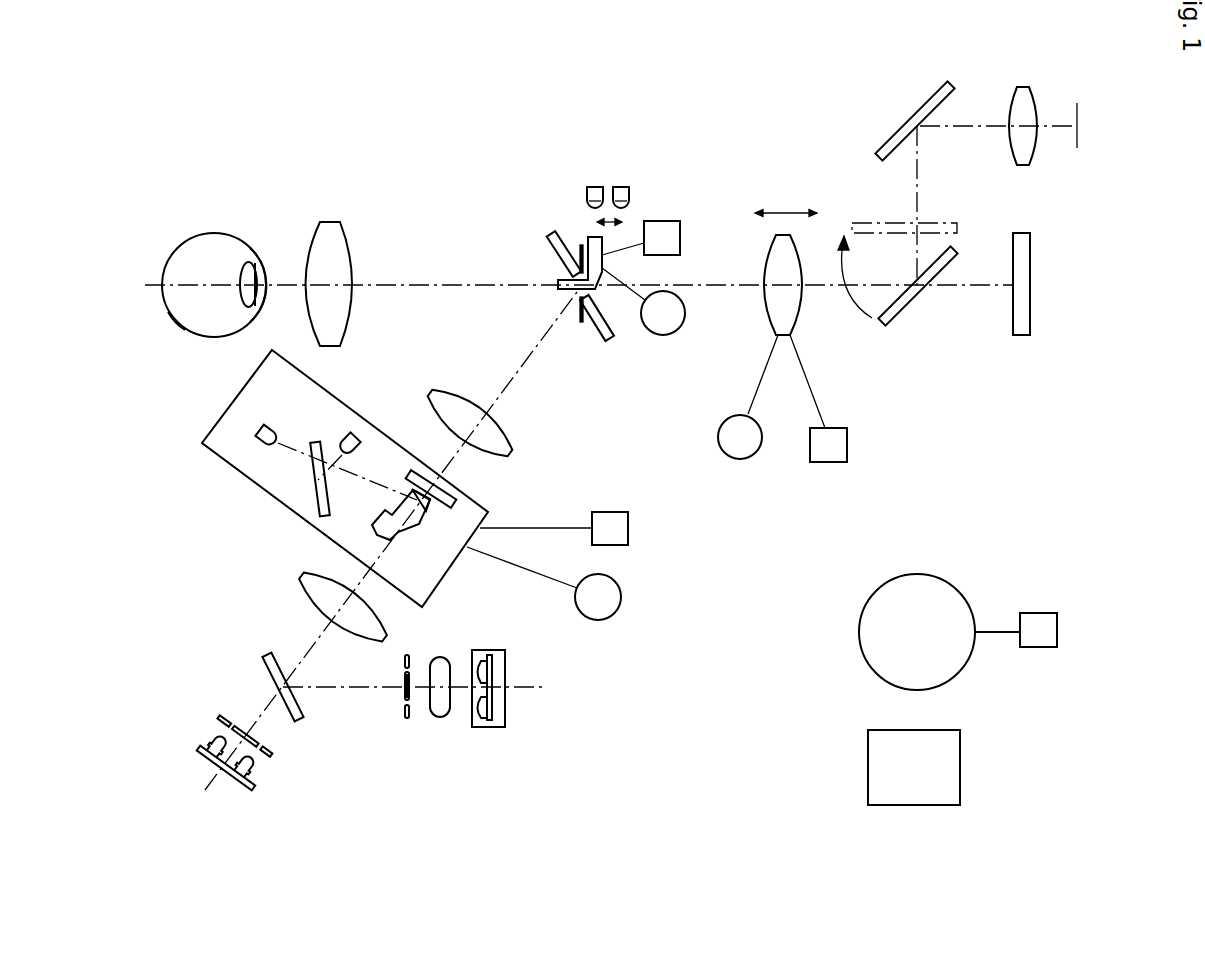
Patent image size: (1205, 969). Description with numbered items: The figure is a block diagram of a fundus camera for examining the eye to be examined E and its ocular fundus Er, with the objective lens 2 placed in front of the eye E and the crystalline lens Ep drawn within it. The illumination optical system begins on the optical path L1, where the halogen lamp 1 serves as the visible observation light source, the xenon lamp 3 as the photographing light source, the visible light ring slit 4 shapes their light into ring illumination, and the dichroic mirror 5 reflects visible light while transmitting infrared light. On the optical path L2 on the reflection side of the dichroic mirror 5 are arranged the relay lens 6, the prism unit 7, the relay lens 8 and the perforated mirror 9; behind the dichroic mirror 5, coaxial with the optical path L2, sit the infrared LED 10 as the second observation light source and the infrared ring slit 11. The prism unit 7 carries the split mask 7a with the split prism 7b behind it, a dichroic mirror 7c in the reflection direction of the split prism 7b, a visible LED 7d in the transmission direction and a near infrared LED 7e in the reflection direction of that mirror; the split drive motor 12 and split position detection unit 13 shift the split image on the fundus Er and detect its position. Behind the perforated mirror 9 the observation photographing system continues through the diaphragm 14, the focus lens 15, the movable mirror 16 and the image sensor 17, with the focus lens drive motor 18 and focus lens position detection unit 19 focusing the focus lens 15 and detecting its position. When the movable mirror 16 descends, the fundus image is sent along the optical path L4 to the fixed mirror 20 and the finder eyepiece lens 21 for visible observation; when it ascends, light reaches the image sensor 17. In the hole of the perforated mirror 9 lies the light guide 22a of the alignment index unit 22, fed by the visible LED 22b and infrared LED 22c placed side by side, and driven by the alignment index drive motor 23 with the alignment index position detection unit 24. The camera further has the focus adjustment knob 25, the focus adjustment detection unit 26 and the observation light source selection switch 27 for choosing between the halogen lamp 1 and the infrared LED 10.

The halogen lamp 1 is at (490, 728).
The objective lens 2 is at (330, 222).
The xenon lamp 3 is at (421, 285).
The visible light ring slit 4 is at (407, 720).
The dichroic mirror 5 is at (265, 655).
The relay lens 6 is at (300, 582).
The prism unit 7 is at (212, 426).
The split mask 7a is at (452, 502).
The split prism 7b is at (400, 538).
The dichroic mirror 7c is at (318, 516).
The visible LED 7d is at (262, 445).
The near infrared LED 7e is at (352, 432).
The relay lens 8 is at (440, 396).
The perforated mirror 9 is at (550, 240).
The infrared light emitting diode 10 is at (198, 758).
The infrared ring slit 11 is at (225, 716).
The split drive motor 12 is at (620, 605).
The split position detection unit 13 is at (630, 528).
The diaphragm 14 is at (582, 325).
The focus lens 15 is at (766, 262).
The movable mirror 16 is at (893, 327).
The image sensor 17 is at (1022, 233).
The focus lens drive motor 18 is at (740, 460).
The focus lens position detection unit 19 is at (830, 462).
The fixed mirror 20 is at (928, 95).
The finder eyepiece lens 21 is at (1023, 87).
The alignment index unit 22 is at (672, 174).
The light guide 22a is at (590, 235).
The visible LED 22b is at (592, 187).
The infrared LED 22c is at (622, 187).
The alignment index drive motor 23 is at (660, 335).
The alignment index position detection unit 24 is at (668, 221).
The focus adjustment knob 25 is at (910, 575).
The focus adjustment detection unit 26 is at (1035, 613).
The observation light source selection switch 27 is at (912, 805).
The eye to be examined E is at (212, 236).
The pupil Ep is at (257, 272).
The ocular fundus Er is at (212, 318).
The optical path L1 is at (535, 690).
The optical path L2 is at (508, 390).
The optical path L4 is at (918, 178).